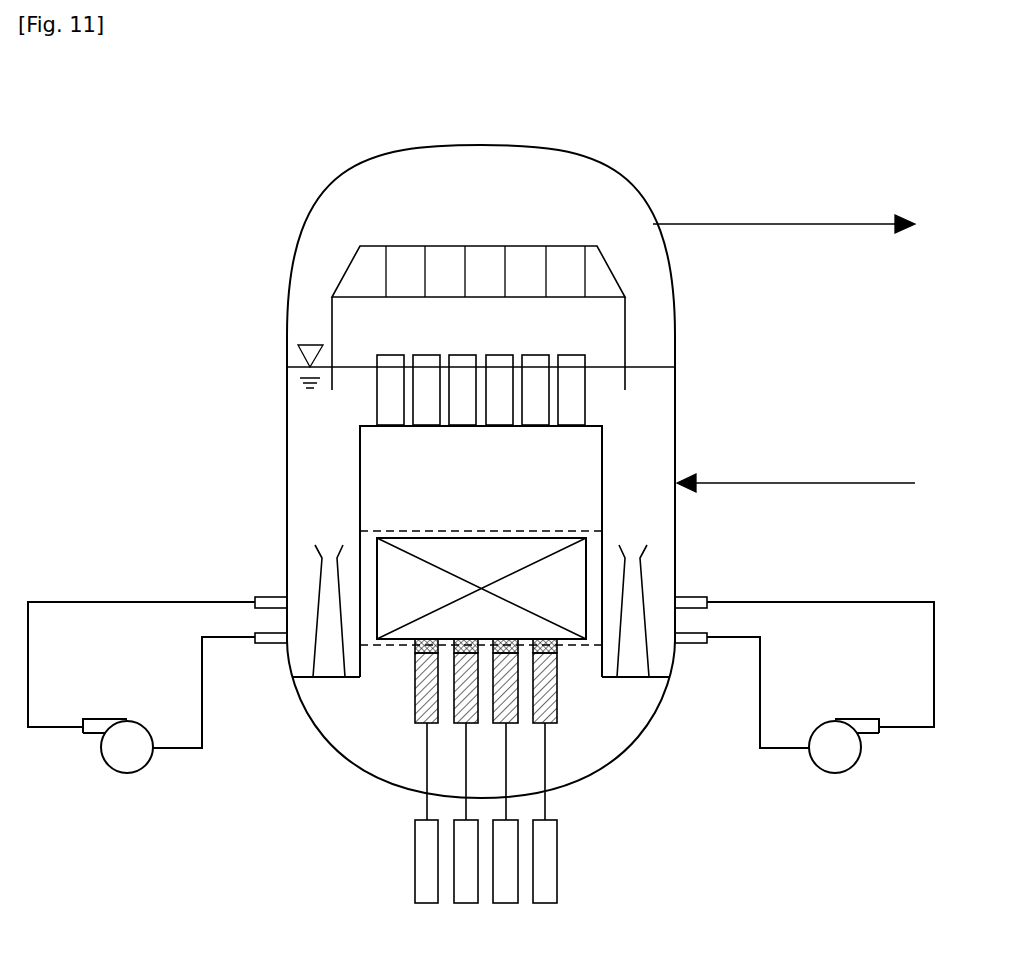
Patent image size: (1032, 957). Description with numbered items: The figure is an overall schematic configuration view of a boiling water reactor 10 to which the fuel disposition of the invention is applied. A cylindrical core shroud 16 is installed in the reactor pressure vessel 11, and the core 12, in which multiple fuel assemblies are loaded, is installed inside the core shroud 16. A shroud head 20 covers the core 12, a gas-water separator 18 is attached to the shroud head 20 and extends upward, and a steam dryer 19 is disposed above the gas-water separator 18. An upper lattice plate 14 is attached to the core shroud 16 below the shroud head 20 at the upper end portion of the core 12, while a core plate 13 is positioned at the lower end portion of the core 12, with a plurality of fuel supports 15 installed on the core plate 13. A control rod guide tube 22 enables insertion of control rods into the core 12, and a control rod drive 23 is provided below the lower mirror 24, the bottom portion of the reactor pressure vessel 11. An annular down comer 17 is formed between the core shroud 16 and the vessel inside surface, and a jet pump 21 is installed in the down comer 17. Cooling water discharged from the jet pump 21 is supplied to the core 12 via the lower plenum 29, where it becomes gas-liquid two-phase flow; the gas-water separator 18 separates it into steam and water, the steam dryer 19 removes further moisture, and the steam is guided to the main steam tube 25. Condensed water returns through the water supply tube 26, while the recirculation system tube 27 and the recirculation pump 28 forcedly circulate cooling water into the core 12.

The boiling water reactor 10 is at (494, 130).
The reactor pressure vessel 11 is at (612, 178).
The core 12 is at (388, 560).
The core plate 13 is at (577, 650).
The upper lattice plate 14 is at (563, 531).
The fuel supports 15 is at (415, 648).
The core shroud 16 is at (360, 455).
The down comer 17 is at (313, 481).
The gas-water separator 18 is at (578, 378).
The steam dryer 19 is at (355, 272).
The shroud head 20 is at (592, 428).
The jet pump 21 is at (315, 585).
The control rod guide tube 22 is at (413, 698).
The control rod drive 23 is at (550, 860).
The lower mirror 24 is at (387, 788).
The main steam tube 25 is at (852, 222).
The water supply tube 26 is at (852, 482).
The recirculation system tube 27 is at (95, 602).
The recirculation pump 28 is at (115, 774).
The lower plenum 29 is at (628, 720).